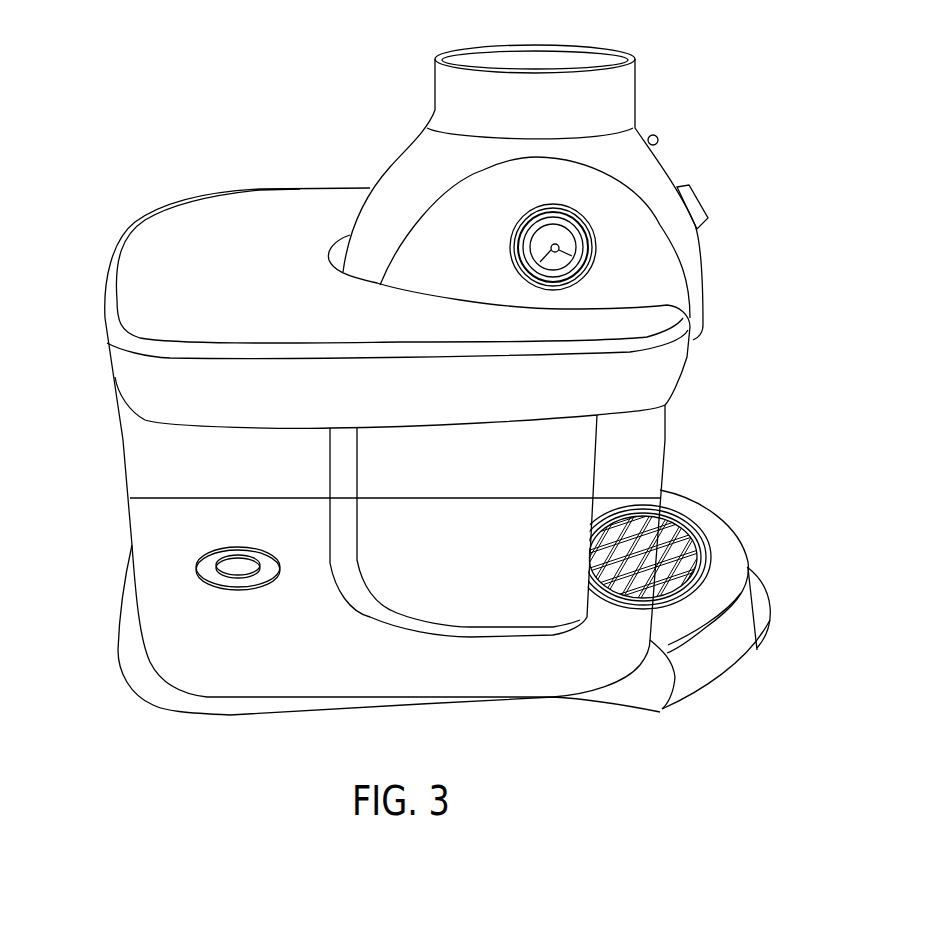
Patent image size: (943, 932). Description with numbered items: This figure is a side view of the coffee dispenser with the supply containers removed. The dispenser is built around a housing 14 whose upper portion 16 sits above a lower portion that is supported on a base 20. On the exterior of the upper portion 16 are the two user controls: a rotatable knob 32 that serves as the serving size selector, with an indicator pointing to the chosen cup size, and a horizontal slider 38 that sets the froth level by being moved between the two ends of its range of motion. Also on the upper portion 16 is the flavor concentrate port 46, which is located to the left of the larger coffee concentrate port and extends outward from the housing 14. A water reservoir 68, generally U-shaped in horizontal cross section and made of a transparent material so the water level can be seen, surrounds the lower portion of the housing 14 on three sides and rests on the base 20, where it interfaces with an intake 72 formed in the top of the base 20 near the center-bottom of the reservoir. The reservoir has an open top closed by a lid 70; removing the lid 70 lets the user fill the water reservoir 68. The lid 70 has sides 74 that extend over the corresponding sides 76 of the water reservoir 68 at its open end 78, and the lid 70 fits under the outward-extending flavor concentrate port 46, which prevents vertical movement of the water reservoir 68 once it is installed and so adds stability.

The housing 14 is at (668, 94).
The upper portion 16 is at (575, 184).
The base 20 is at (689, 580).
The rotatable knob 32 is at (696, 197).
The horizontal slider 38 is at (659, 138).
The flavor concentrate port 46 is at (626, 253).
The water reservoir 68 is at (356, 516).
The lid 70 is at (253, 212).
The intake 72 is at (215, 568).
The sides of the lid 74 is at (140, 358).
The sides of the water reservoir 76 is at (597, 522).
The open end 78 is at (361, 287).